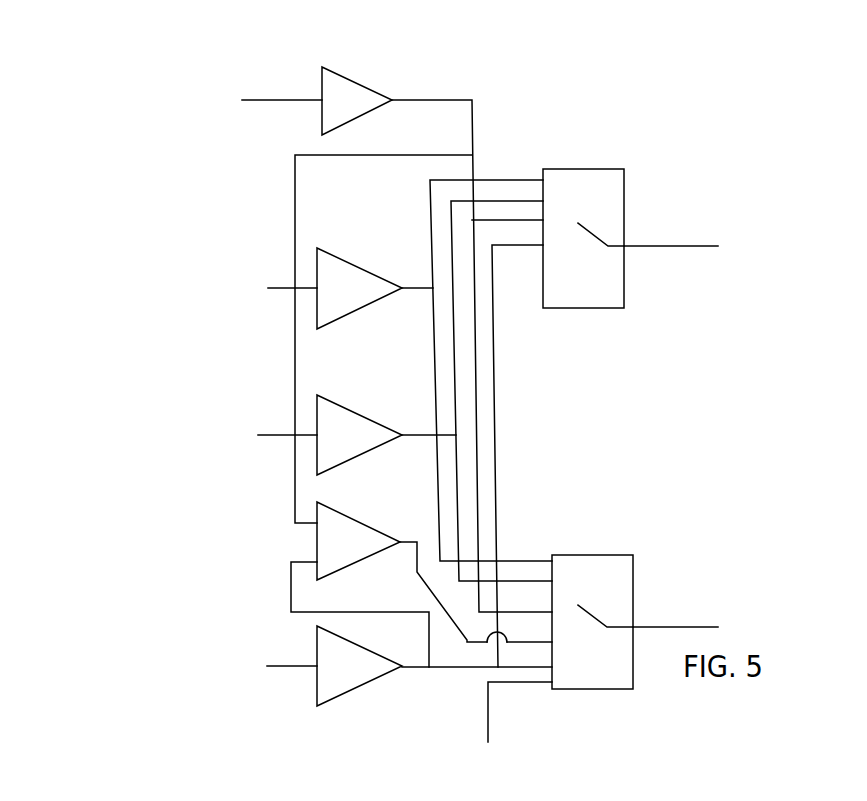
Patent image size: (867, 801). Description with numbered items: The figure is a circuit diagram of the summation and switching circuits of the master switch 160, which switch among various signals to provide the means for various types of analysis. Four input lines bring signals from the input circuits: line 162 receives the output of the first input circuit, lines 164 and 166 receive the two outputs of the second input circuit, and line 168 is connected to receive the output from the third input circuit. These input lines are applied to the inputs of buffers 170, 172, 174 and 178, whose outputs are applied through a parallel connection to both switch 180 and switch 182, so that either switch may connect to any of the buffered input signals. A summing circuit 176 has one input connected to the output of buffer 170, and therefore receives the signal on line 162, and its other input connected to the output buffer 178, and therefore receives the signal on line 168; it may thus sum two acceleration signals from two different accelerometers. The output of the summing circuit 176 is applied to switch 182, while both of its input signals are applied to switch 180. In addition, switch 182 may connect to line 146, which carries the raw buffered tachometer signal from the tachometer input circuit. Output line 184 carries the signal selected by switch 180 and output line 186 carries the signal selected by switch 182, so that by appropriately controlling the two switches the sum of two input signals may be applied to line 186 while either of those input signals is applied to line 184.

The master switch 160 is at (146, 189).
The line 162 is at (290, 98).
The line 164 is at (283, 285).
The line 166 is at (268, 433).
The line 168 is at (283, 663).
The buffer 170 is at (342, 75).
The buffer 172 is at (335, 260).
The buffer 174 is at (333, 405).
The summing circuit 176 is at (340, 507).
The buffer 178 is at (375, 680).
The switch 180 is at (595, 182).
The switch 182 is at (578, 583).
The output line 184 is at (667, 246).
The output line 186 is at (668, 627).
The line 146 is at (488, 705).